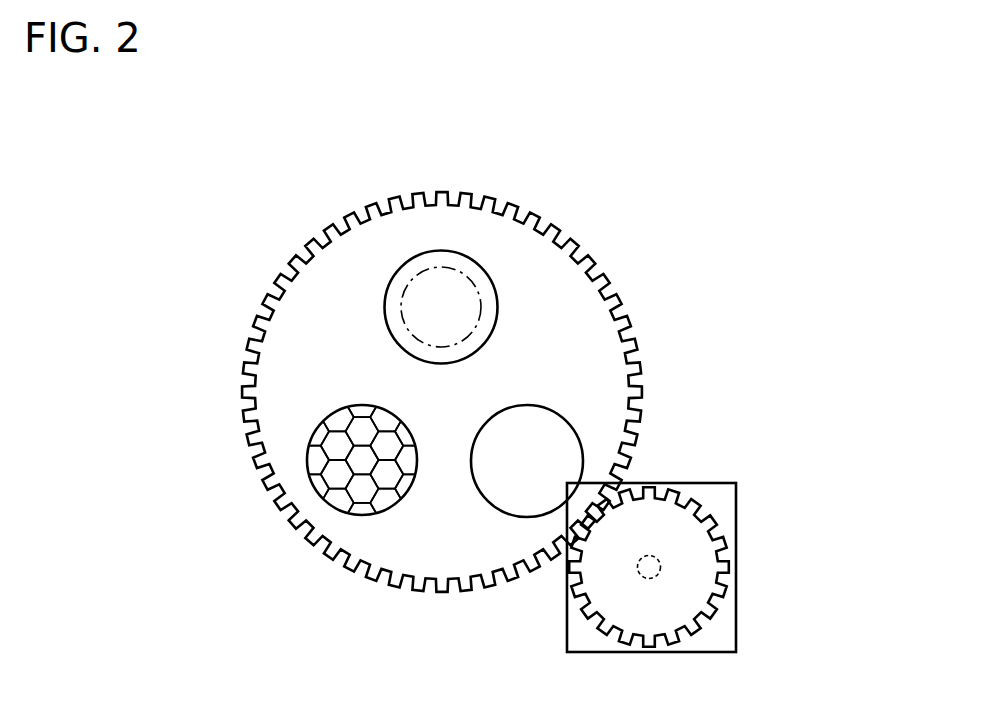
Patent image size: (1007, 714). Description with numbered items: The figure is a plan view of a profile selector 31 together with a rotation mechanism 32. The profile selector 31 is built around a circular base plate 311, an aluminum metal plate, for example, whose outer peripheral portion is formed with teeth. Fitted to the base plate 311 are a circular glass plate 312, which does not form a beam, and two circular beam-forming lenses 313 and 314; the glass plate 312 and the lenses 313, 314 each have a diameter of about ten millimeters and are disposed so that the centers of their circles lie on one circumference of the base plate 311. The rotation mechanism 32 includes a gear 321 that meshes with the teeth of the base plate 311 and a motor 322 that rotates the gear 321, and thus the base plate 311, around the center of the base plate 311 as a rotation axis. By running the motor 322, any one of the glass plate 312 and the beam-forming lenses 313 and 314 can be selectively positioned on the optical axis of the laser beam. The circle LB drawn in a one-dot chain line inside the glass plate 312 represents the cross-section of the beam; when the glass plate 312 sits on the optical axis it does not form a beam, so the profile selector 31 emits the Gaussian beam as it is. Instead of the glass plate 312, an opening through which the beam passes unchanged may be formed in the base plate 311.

The profile selector 31 is at (453, 356).
The base plate 311 is at (593, 335).
The glass plate 312 is at (536, 253).
The beam cross-section LB is at (444, 273).
The beam-forming lens 313 is at (322, 483).
The beam-forming lens 314 is at (555, 440).
The rotation mechanism 32 is at (697, 522).
The gear 321 is at (700, 570).
The motor 322 is at (737, 518).